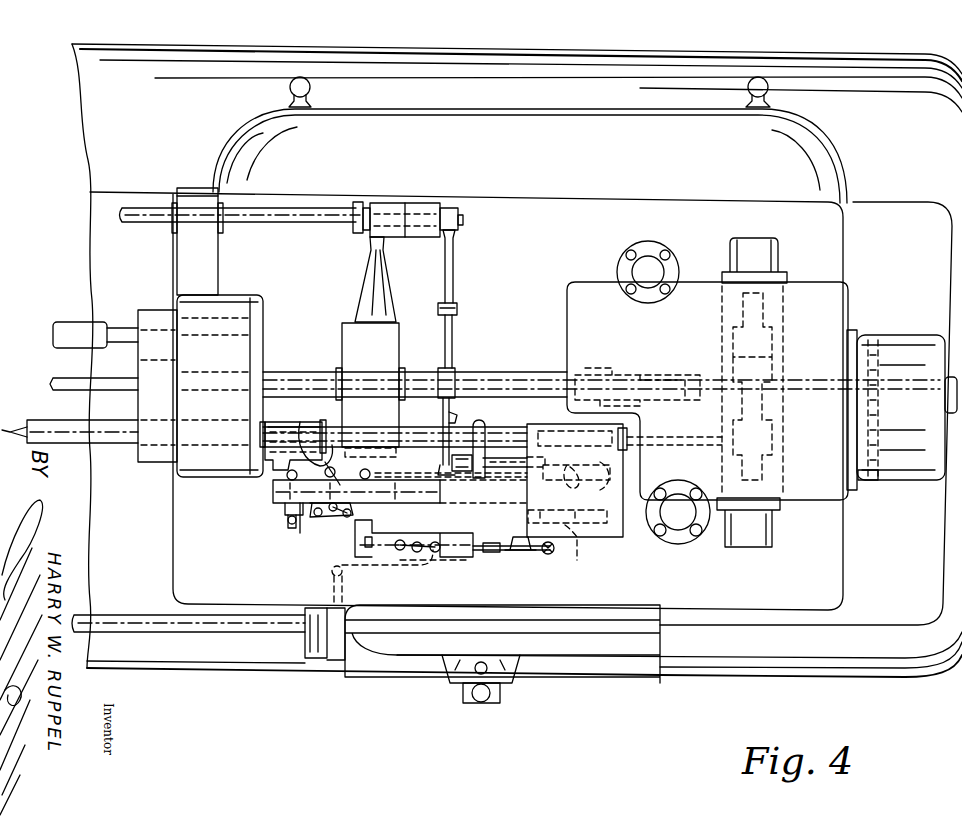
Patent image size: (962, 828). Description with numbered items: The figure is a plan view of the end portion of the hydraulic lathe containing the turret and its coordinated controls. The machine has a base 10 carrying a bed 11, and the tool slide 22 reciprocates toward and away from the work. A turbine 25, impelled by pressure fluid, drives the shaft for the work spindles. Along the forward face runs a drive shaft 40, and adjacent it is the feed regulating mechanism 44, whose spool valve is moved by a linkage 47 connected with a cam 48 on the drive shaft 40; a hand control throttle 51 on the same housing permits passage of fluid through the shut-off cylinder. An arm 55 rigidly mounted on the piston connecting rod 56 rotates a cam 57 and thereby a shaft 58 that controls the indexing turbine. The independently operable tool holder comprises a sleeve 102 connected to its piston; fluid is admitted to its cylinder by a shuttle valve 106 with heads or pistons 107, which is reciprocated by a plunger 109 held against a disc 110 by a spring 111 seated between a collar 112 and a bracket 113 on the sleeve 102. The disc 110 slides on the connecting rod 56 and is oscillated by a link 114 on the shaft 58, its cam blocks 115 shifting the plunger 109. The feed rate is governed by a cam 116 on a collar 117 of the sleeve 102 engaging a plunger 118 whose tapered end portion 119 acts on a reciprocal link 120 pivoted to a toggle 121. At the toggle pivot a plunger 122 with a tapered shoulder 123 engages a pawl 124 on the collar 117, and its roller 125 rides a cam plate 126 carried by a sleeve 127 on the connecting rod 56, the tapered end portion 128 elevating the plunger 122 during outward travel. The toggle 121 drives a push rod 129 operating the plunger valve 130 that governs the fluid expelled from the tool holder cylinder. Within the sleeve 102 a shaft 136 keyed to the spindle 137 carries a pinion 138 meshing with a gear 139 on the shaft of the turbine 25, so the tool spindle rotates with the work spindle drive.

The base 10 is at (855, 84).
The bed 11 is at (108, 252).
The tool slide 22 is at (150, 322).
The turbine 25 is at (903, 352).
The drive shaft 40 is at (192, 628).
The feed regulating mechanism 44 is at (590, 648).
The linkage 47 is at (500, 552).
The cam 48 is at (320, 660).
The hand control throttle 51 is at (470, 703).
The arm 55 is at (372, 300).
The piston connecting rod 56 is at (484, 378).
The cam 57 is at (385, 210).
The shaft 58 is at (254, 208).
The sleeve 102 is at (404, 437).
The shuttle valve 106 is at (572, 475).
The heads or pistons 107 is at (608, 478).
The plunger 109 is at (509, 468).
The disc 110 is at (455, 340).
The spring 111 is at (446, 455).
The collar 112 is at (450, 464).
The bracket 113 is at (484, 422).
The link 114 is at (454, 268).
The cam blocks 115 is at (462, 410).
The cam 116 is at (278, 470).
The collar 117 is at (278, 420).
The plunger 118 is at (287, 510).
The tapered end portion 119 is at (290, 524).
The reciprocal link 120 is at (292, 526).
The toggle 121 is at (336, 518).
The plunger 122 is at (316, 515).
The tapered shoulder 123 is at (340, 480).
The pawl 124 is at (288, 402).
The roller 125 is at (330, 440).
The cam plate 126 is at (336, 460).
The sleeve 127 is at (383, 345).
The tapered end portion 128 is at (352, 478).
The push rod 129 is at (472, 480).
The plunger valve 130 is at (577, 537).
The shaft 136 is at (660, 442).
The spindle 137 is at (108, 436).
The pinion 138 is at (872, 482).
The gear 139 is at (870, 338).